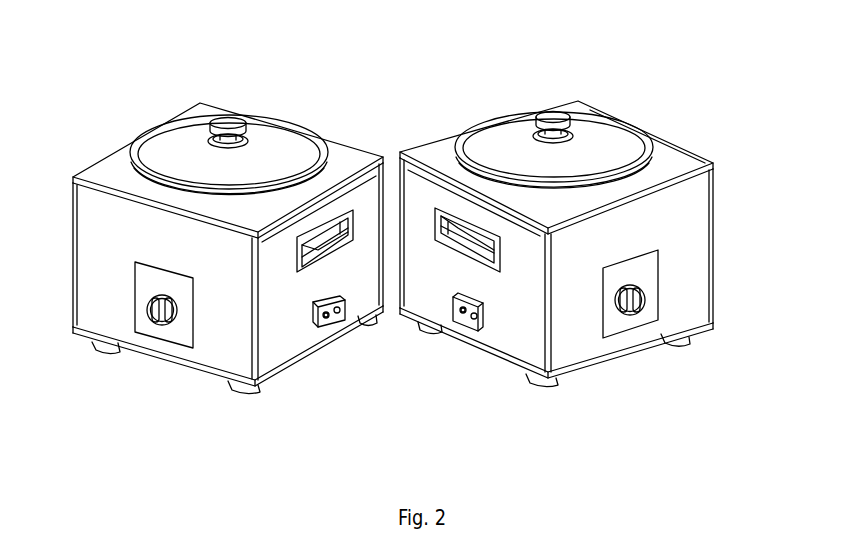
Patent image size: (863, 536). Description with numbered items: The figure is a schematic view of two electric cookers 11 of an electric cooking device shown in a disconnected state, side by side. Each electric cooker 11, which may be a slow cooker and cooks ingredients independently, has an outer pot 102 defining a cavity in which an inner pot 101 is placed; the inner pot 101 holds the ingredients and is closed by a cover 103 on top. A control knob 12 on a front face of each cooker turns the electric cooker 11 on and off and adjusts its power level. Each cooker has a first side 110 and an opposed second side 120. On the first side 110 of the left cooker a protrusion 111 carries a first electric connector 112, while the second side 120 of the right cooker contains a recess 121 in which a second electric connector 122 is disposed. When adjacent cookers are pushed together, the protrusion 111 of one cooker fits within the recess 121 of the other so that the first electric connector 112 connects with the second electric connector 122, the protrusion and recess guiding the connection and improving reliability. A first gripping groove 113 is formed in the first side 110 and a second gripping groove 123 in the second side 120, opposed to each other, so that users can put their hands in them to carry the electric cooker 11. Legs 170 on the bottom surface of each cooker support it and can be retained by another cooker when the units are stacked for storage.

The electric cooker 11 is at (132, 122).
The control knob 12 is at (155, 323).
The inner pot 101 is at (638, 160).
The outer pot 102 is at (670, 168).
The cover 103 is at (180, 133).
The first side 110 is at (368, 190).
The protrusion 111 is at (337, 312).
The first electric connector 112 is at (330, 320).
The first gripping groove 113 is at (318, 240).
The second side 120 is at (413, 195).
The recess 121 is at (472, 315).
The second electric connector 122 is at (465, 317).
The second gripping groove 123 is at (470, 237).
The legs 170 is at (100, 353).